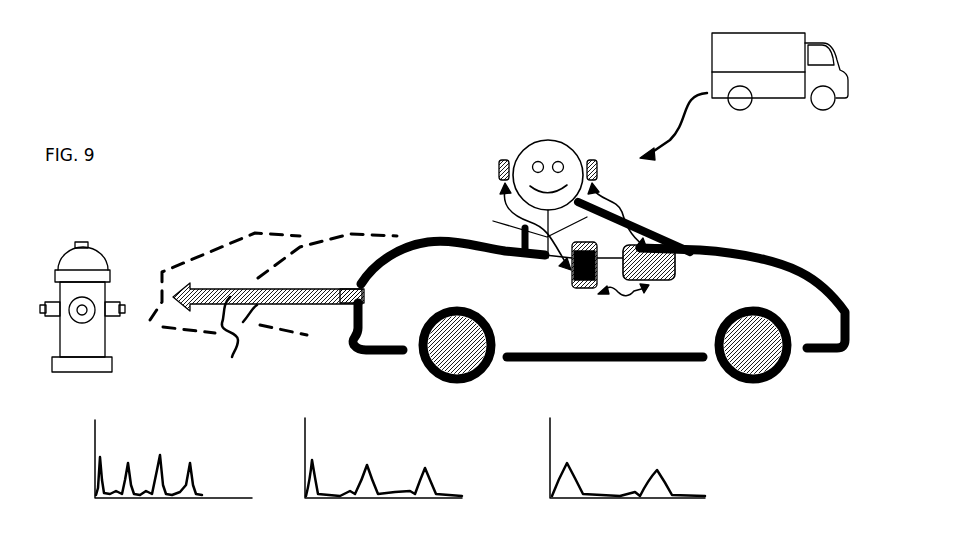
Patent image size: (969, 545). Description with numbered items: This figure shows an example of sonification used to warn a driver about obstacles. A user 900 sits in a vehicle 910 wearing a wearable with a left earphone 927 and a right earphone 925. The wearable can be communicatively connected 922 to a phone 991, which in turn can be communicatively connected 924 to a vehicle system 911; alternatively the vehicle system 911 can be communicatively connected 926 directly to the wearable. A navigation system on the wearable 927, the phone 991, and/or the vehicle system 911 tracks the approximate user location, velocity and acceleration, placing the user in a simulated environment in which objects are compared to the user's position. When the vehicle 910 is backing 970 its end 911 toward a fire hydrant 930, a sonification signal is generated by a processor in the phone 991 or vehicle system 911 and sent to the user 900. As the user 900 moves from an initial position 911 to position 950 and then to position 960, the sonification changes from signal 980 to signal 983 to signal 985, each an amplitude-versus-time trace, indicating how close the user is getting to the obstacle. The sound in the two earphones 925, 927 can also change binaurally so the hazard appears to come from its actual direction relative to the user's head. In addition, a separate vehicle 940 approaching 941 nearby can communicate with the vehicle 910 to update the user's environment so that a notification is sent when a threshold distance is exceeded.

The user 900 is at (545, 140).
The vehicle 910 is at (708, 249).
The vehicle system 911 is at (424, 278).
The communicative connection between wearable and phone 922 is at (518, 226).
The communicative connection between phone and vehicle system 924 is at (623, 305).
The right earphone 925 is at (597, 167).
The communicative connection between vehicle system and wearable 926 is at (626, 216).
The left earphone 927 is at (500, 170).
The fire hydrant 930 is at (71, 307).
The separate vehicle 940 is at (780, 82).
The approaching truck direction 941 is at (673, 117).
The second position 950 is at (327, 271).
The third position 960 is at (225, 270).
The backing 970 is at (237, 341).
The sonification 980 is at (608, 473).
The sonification 983 is at (358, 473).
The sonification 985 is at (149, 472).
The phone 991 is at (572, 288).